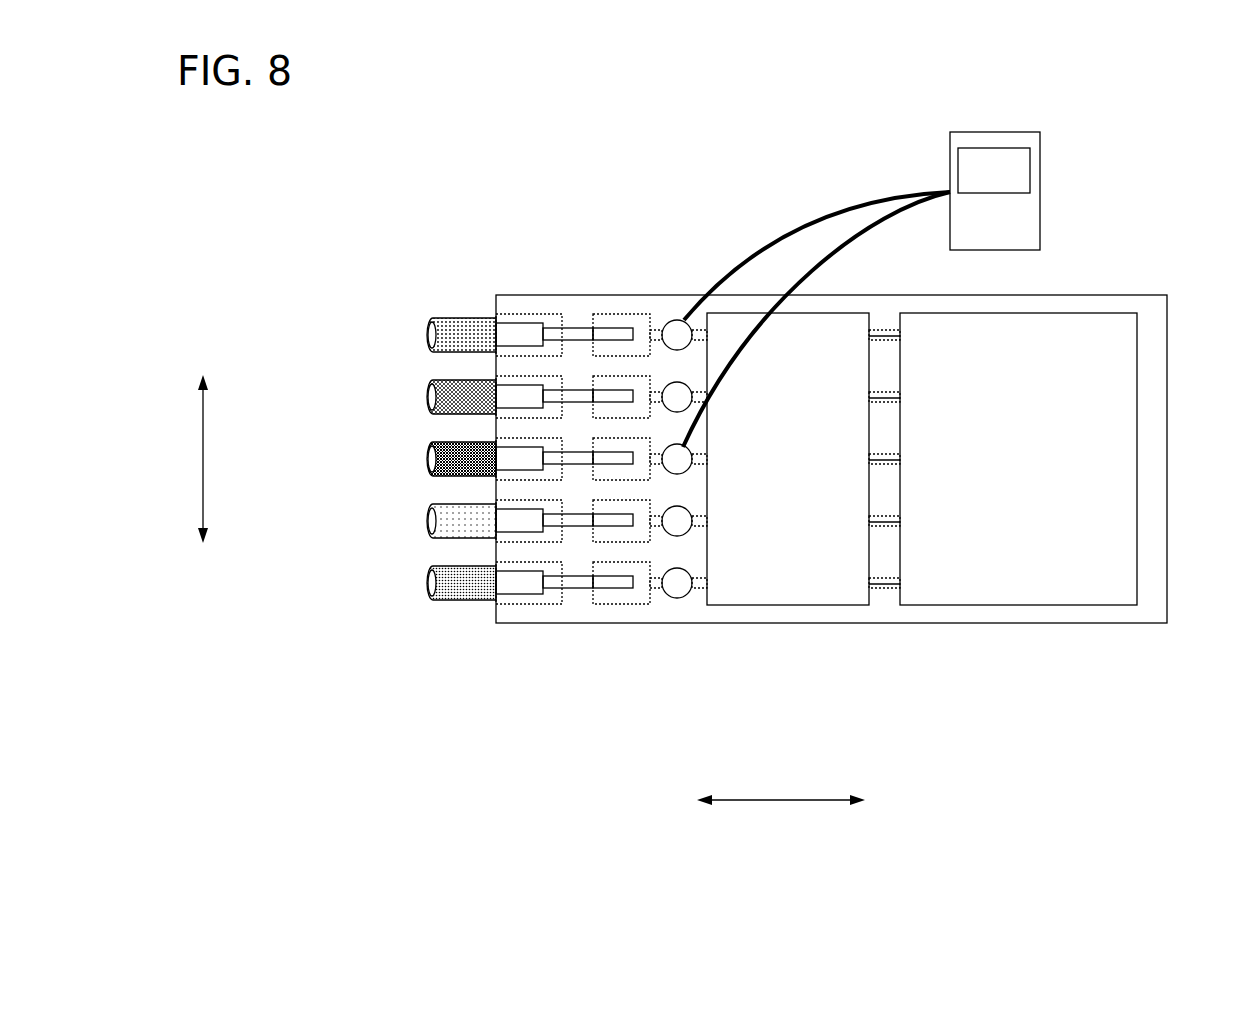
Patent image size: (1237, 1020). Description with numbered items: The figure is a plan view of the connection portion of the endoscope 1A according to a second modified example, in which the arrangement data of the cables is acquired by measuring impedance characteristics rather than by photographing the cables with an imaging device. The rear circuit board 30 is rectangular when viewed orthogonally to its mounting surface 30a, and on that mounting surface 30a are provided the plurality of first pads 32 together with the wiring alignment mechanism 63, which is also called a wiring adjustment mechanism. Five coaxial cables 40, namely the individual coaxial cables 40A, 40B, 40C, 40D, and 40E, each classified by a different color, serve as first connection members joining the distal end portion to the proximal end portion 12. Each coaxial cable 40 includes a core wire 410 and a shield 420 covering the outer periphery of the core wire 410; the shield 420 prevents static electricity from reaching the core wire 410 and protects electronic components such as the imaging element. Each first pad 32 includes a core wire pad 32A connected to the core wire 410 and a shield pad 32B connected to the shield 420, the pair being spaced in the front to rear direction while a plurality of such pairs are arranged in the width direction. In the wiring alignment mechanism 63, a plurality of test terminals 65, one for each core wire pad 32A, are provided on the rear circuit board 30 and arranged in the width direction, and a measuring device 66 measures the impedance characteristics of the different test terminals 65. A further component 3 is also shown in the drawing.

The endoscope 1A is at (1104, 203).
The proximal end portion 12 is at (1153, 285).
The rear circuit board 30 is at (589, 624).
The mounting surface 30a is at (684, 610).
The connector 3 is at (1137, 460).
The wiring alignment mechanism 63 is at (790, 607).
The test terminal 65 is at (668, 322).
The shield 420 is at (517, 314).
The core wire 410 is at (624, 328).
The first pad 32 is at (625, 175).
The core wire pad 32A is at (613, 314).
The shield pad 32B is at (537, 314).
The coaxial cable 40 is at (388, 443).
The coaxial cable 40A is at (453, 379).
The coaxial cable 40B is at (453, 317).
The coaxial cable 40C is at (453, 565).
The coaxial cable 40D is at (453, 503).
The coaxial cable 40E is at (453, 441).
The measuring device 66 is at (994, 132).